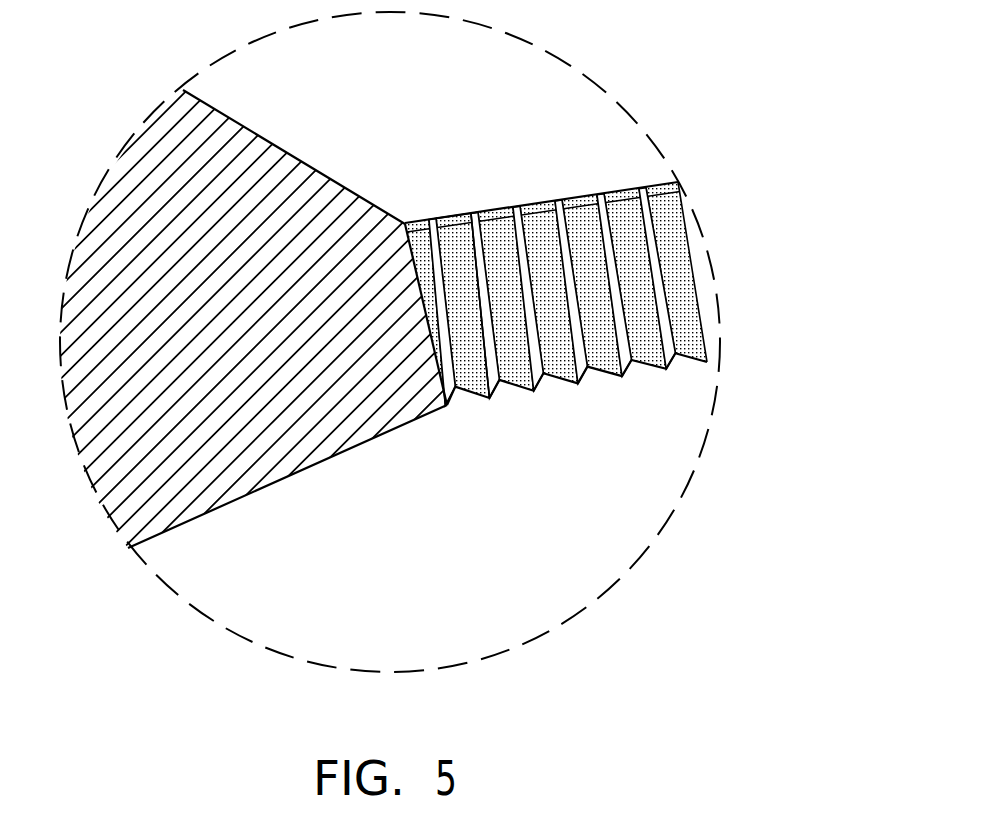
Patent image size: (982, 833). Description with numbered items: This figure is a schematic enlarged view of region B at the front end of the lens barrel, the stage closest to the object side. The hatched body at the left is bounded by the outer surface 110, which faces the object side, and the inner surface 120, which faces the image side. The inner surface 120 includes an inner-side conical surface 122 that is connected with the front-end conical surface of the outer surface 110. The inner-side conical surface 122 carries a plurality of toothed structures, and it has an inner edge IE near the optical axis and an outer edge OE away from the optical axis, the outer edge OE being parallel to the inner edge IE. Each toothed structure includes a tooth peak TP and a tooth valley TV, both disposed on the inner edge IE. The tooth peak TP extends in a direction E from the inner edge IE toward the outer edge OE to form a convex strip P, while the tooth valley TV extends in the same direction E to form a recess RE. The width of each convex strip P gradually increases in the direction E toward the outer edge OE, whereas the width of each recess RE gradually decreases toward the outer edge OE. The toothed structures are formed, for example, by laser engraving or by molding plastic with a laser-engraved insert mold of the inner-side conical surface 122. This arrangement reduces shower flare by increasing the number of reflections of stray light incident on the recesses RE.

The outer surface 110 is at (188, 525).
The inner surface 120 is at (562, 303).
The inner-side conical surface 122 is at (607, 321).
The region B is at (537, 48).
The direction E is at (738, 168).
The outer edge OE is at (505, 203).
The inner edge IE is at (539, 382).
The recess RE is at (466, 213).
The convex strip P is at (489, 205).
The tooth peak TP is at (569, 384).
The tooth valley TV is at (588, 377).